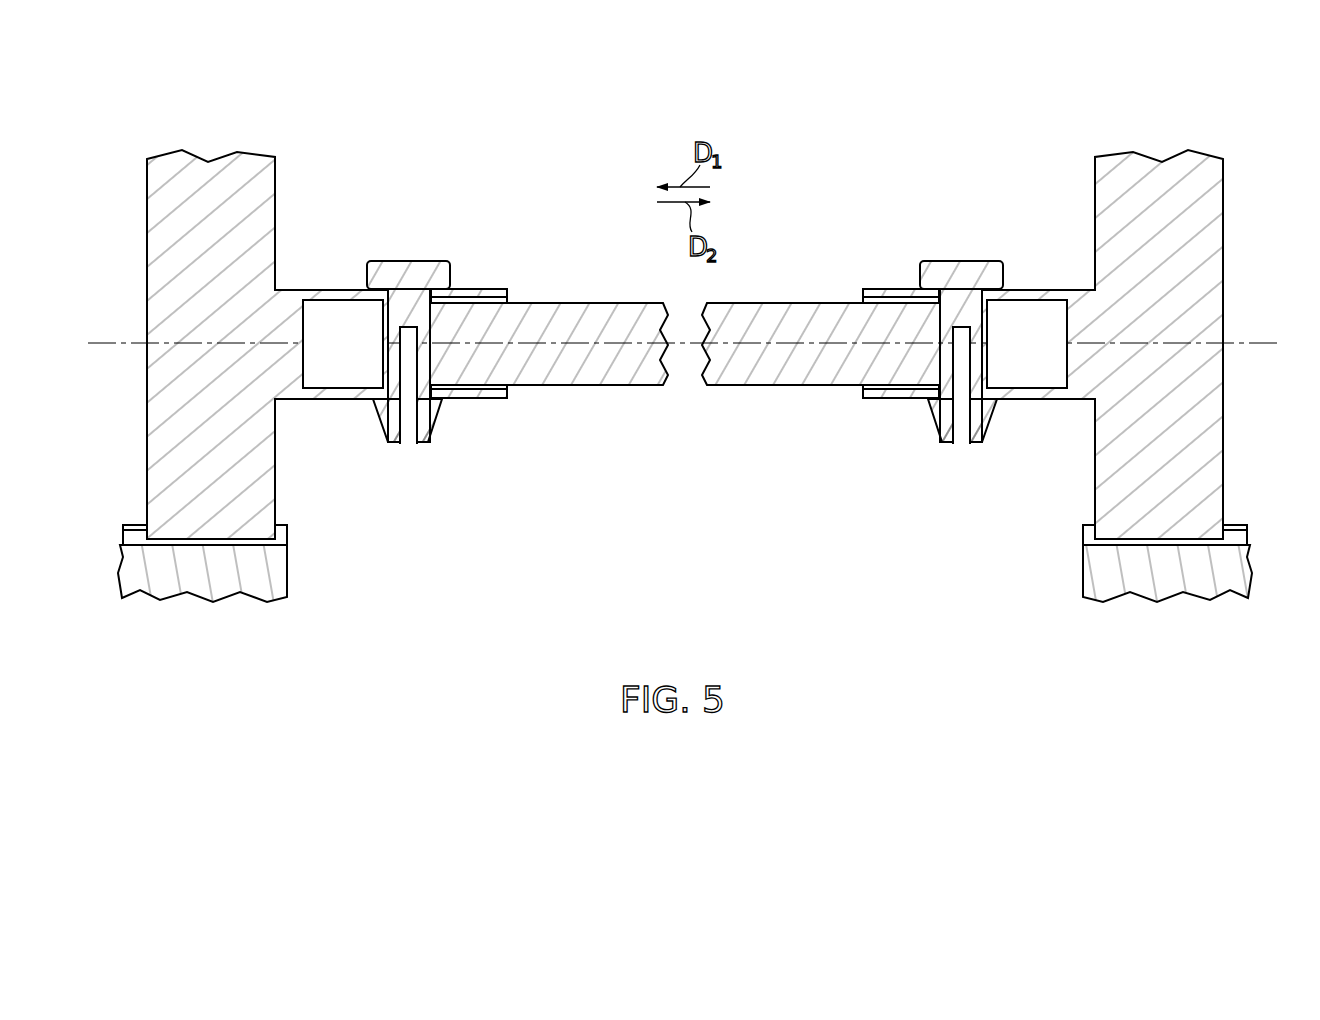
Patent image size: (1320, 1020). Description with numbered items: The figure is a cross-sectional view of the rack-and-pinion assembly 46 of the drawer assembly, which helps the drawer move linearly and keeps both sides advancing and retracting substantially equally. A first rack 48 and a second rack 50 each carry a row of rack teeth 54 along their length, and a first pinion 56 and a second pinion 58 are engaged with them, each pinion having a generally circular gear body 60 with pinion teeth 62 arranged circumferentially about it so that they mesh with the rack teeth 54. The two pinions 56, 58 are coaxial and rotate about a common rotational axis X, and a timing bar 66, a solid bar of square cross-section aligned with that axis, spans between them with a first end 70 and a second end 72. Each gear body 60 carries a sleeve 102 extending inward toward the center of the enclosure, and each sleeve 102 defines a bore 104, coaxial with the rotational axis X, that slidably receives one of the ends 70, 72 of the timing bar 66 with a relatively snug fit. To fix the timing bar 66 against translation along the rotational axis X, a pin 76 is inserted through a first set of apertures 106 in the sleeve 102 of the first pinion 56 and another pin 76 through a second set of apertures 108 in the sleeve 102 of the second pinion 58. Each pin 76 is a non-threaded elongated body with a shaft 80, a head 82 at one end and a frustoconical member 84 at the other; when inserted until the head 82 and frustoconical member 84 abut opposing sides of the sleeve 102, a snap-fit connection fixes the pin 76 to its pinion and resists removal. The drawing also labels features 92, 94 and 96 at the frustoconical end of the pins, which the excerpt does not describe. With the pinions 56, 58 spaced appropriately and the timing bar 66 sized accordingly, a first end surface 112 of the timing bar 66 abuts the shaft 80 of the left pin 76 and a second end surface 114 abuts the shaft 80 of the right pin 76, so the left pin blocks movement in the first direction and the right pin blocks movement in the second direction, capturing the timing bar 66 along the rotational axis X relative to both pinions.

The rack-and-pinion assembly 46 is at (340, 118).
The first rack 48 is at (178, 600).
The second rack 50 is at (1192, 600).
The rack teeth 54 is at (288, 535).
The first pinion 56 is at (243, 157).
The second pinion 58 is at (1128, 155).
The gear body 60 is at (278, 172).
The pinion teeth 62 is at (130, 530).
The timing bar 66 is at (608, 303).
The first end 70 is at (465, 400).
The second end 72 is at (900, 400).
The pin 76 is at (415, 260).
The shaft 80 is at (433, 378).
The head 82 is at (455, 290).
The frustoconical member 84 is at (372, 415).
The slot 92 is at (409, 444).
The first prong 94 is at (393, 445).
The second prong 96 is at (425, 445).
The sleeve 102 is at (500, 400).
The bore 104 is at (512, 300).
The first set of apertures 106 is at (386, 310).
The second set of apertures 108 is at (984, 310).
The first end surface 112 is at (413, 305).
The second end surface 114 is at (947, 305).
The rotational axis X is at (98, 343).